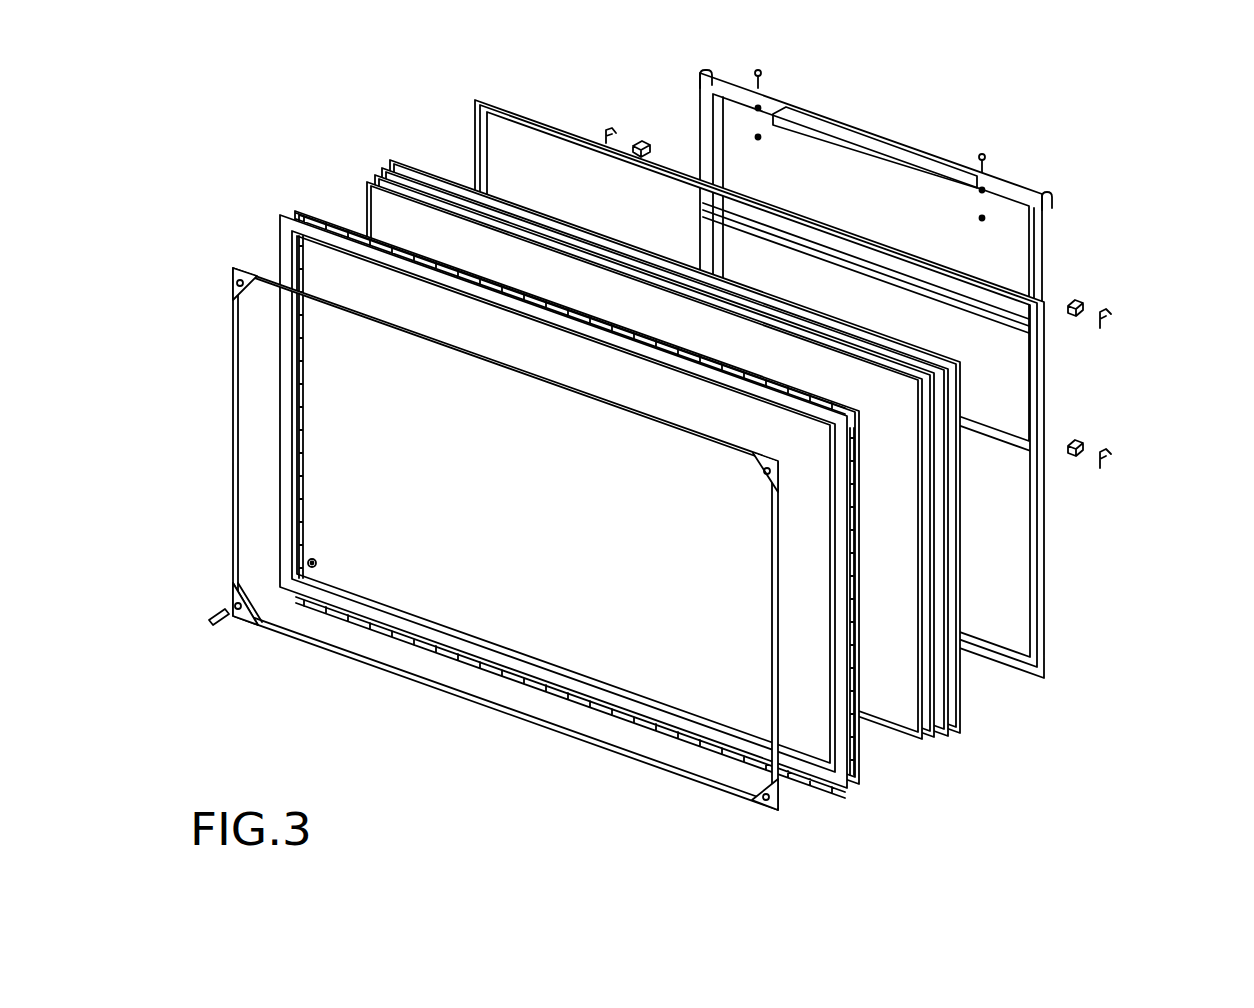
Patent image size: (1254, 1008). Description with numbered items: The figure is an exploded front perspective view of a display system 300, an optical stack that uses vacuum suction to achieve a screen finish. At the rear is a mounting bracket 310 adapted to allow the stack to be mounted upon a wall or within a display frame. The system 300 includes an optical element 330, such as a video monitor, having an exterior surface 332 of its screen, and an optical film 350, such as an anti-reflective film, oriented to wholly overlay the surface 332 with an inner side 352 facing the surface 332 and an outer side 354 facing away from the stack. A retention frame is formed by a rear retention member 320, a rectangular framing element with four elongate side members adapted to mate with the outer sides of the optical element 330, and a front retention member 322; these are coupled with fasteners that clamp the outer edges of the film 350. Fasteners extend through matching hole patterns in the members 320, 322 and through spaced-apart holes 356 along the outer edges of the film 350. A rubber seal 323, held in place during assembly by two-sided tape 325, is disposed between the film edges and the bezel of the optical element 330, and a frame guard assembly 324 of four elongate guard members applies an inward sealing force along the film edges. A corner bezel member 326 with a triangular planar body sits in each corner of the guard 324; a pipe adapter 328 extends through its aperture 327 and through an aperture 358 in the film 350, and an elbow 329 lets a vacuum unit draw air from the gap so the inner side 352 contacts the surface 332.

The display system 300 is at (226, 146).
The mounting bracket 310 is at (1072, 264).
The rear retention member 320 is at (1092, 582).
The front retention member 322 is at (852, 806).
The rubber seal 323 is at (367, 165).
The frame guard assembly 324 is at (782, 818).
The two-sided tape 325 is at (413, 172).
The corner bezel member 326 is at (258, 609).
The aperture 327 is at (242, 592).
The pipe adapter 328 is at (244, 626).
The elbow 329 is at (212, 632).
The optical element 330 is at (962, 746).
The exterior surface 332 is at (944, 722).
The optical film 350 is at (320, 200).
The inner side 352 is at (508, 288).
The outer side 354 is at (517, 504).
The holes 356 is at (568, 312).
The aperture 358 is at (315, 560).